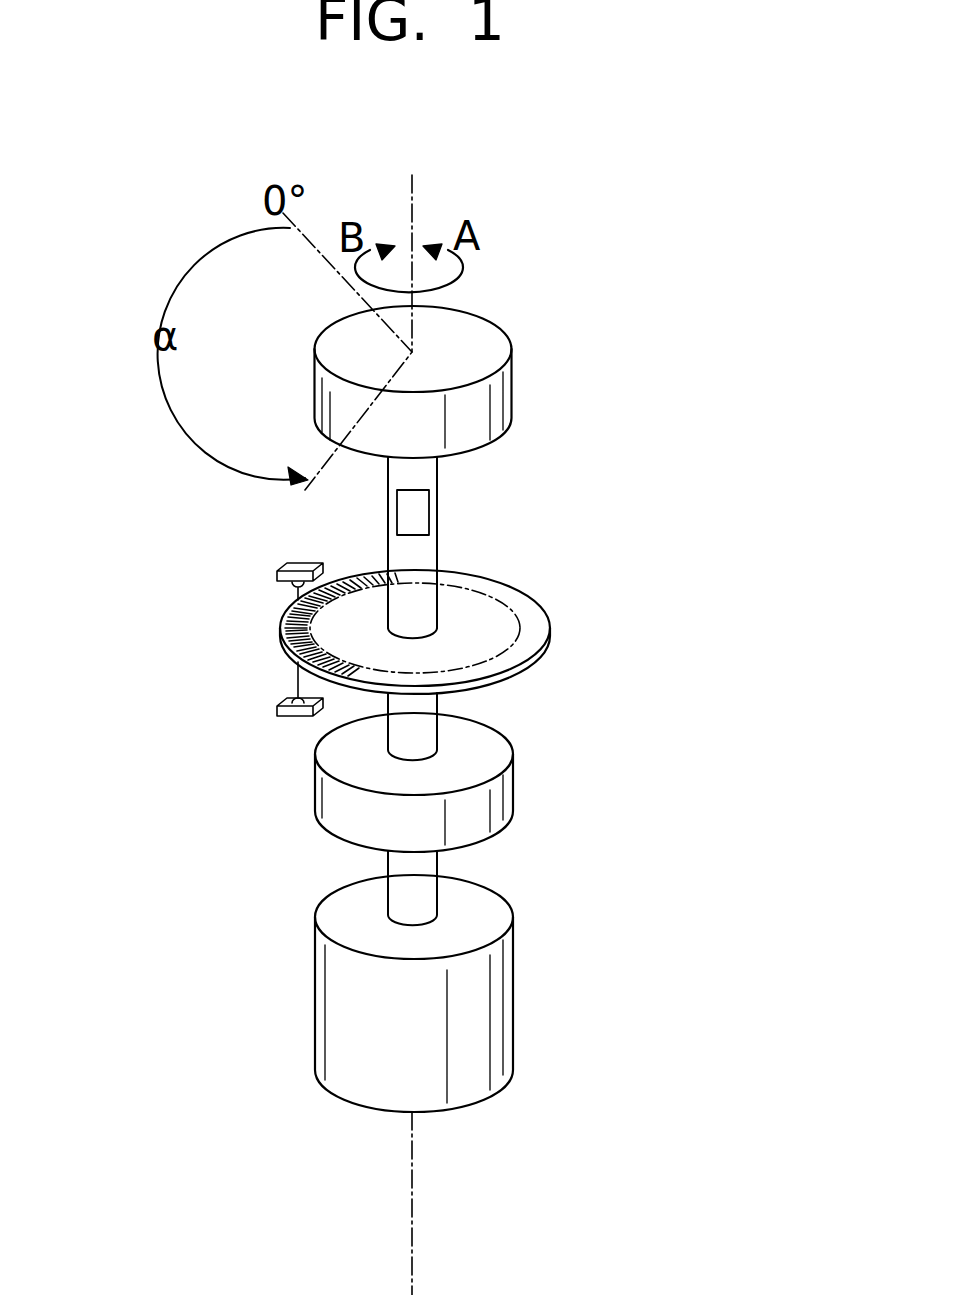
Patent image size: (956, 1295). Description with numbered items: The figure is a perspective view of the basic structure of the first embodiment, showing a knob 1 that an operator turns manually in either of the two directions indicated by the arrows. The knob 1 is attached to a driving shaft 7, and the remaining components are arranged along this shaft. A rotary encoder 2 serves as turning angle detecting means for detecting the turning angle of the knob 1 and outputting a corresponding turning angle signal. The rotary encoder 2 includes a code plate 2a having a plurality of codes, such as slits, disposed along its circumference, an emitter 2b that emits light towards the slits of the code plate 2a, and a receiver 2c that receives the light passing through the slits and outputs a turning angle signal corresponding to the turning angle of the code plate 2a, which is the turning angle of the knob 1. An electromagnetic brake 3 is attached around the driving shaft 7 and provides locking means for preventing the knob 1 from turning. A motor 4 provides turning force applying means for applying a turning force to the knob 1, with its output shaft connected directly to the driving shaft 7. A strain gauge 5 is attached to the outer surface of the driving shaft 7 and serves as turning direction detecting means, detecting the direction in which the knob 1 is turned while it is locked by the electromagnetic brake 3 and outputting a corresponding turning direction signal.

The knob 1 is at (513, 385).
The rotary encoder 2 is at (150, 586).
The code plate 2a is at (283, 640).
The emitter 2b is at (292, 562).
The receiver 2c is at (285, 702).
The electromagnetic brake 3 is at (514, 778).
The motor 4 is at (514, 975).
The strain gauge 5 is at (418, 512).
The driving shaft 7 is at (437, 862).